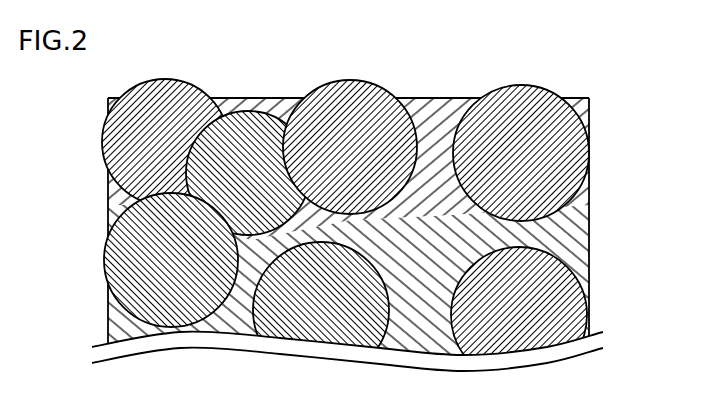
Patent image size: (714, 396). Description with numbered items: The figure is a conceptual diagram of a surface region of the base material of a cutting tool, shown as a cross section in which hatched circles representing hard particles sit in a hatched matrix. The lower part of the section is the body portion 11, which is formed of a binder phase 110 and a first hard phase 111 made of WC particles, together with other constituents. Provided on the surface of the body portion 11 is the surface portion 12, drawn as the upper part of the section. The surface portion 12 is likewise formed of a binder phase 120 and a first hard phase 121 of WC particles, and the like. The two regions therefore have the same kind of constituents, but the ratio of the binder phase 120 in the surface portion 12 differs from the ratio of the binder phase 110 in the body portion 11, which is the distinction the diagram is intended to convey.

The body portion 11 is at (399, 283).
The binder phase of body portion 110 is at (550, 227).
The first hard phase of body portion 111 is at (548, 296).
The surface portion 12 is at (399, 149).
The binder phase of surface portion 120 is at (445, 115).
The first hard phase of surface portion 121 is at (550, 153).